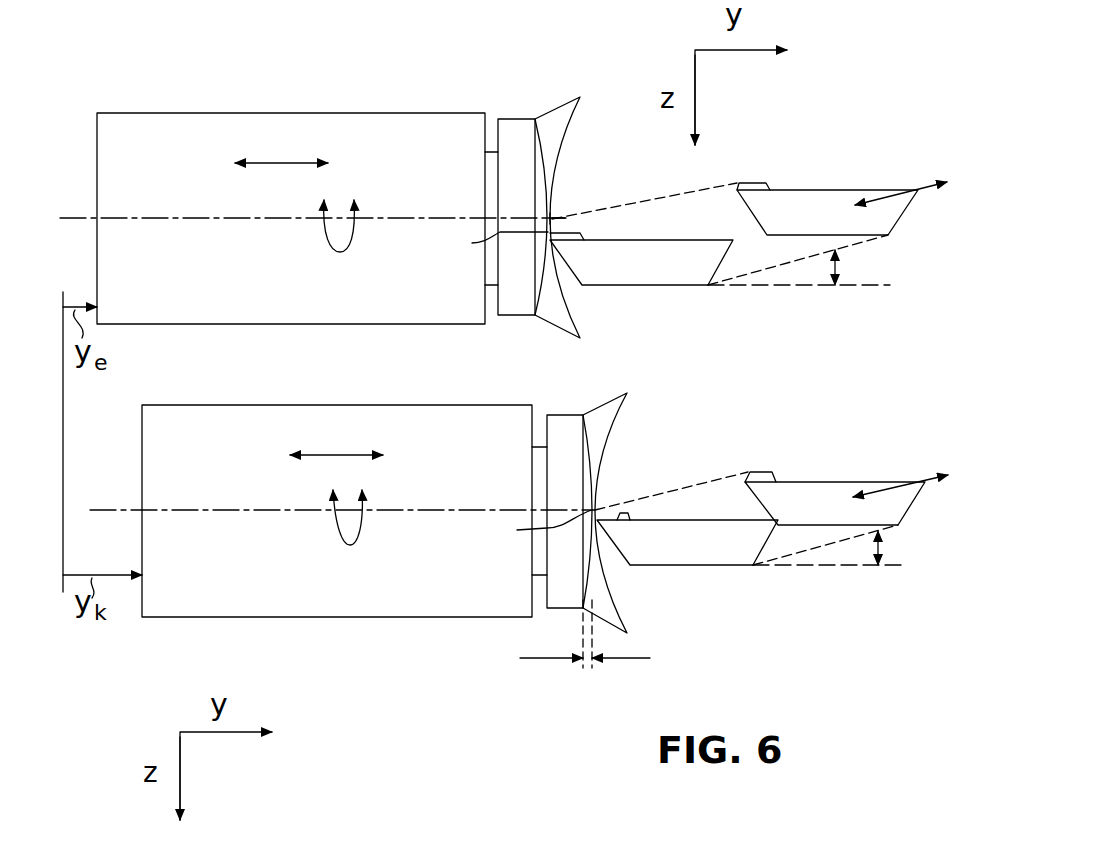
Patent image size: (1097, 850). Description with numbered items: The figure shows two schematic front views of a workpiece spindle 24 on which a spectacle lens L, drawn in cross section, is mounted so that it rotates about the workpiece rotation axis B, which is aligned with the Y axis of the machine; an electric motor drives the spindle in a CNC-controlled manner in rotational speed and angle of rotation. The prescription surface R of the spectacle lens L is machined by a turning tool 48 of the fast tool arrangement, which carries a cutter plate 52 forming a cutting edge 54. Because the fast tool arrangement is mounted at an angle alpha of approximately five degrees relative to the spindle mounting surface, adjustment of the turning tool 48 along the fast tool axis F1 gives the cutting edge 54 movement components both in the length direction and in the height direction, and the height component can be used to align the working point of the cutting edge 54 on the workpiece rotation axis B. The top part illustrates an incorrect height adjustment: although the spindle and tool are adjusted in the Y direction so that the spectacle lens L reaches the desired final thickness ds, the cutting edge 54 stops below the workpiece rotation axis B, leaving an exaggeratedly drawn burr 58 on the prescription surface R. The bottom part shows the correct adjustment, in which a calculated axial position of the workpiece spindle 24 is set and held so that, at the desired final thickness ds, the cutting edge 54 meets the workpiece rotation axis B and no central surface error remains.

The workpiece spindle 24 is at (157, 172).
The turning tool 48 is at (630, 255).
The cutter plate 52 is at (560, 243).
The cutting edge 54 is at (742, 470).
The burr 58 is at (553, 214).
The spectacle lens L is at (556, 106).
The prescription surface R is at (560, 152).
The fast tool axis F1 is at (905, 183).
The Y axis Y is at (272, 163).
The workpiece rotation axis B is at (330, 235).
The angle alpha is at (840, 262).
The desired final thickness ds is at (589, 662).